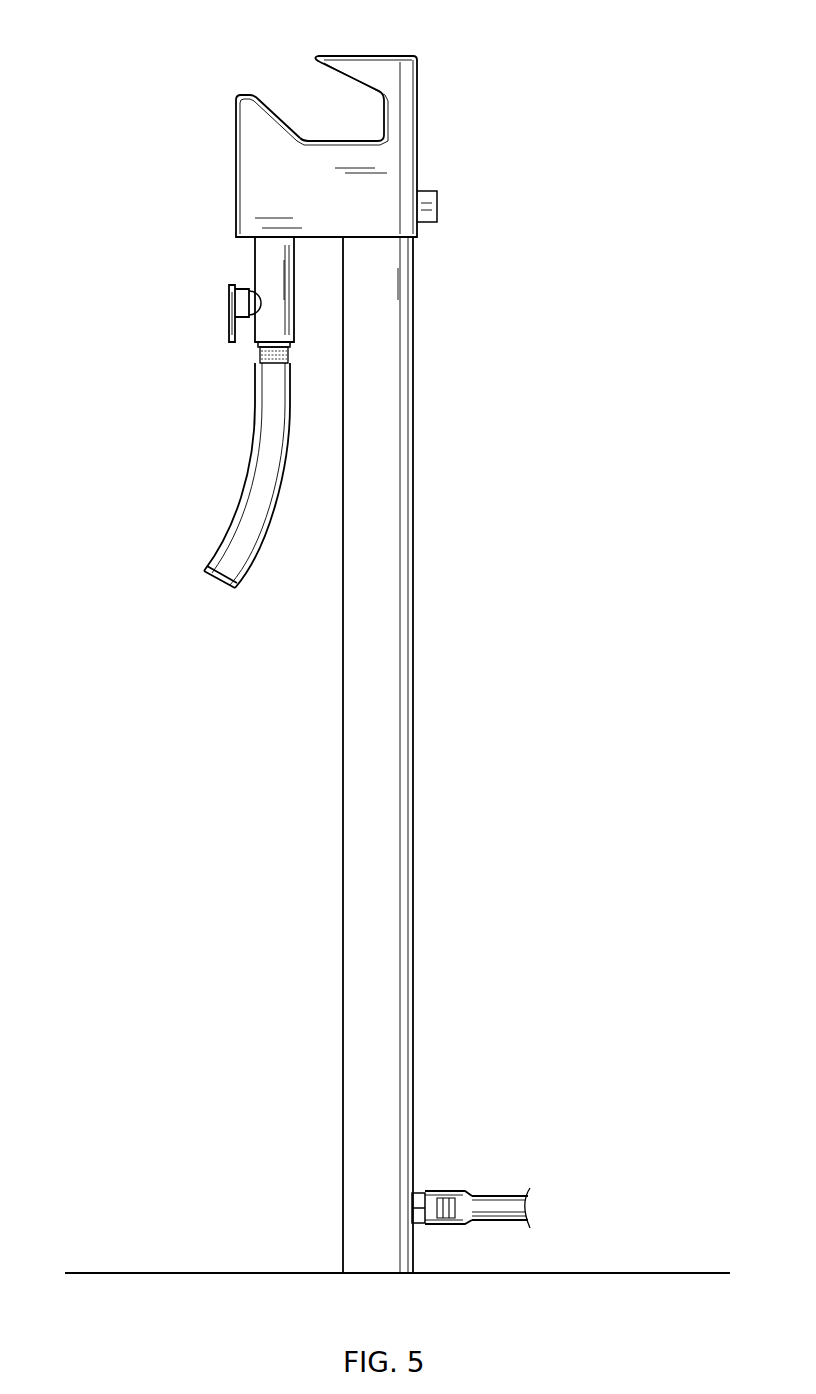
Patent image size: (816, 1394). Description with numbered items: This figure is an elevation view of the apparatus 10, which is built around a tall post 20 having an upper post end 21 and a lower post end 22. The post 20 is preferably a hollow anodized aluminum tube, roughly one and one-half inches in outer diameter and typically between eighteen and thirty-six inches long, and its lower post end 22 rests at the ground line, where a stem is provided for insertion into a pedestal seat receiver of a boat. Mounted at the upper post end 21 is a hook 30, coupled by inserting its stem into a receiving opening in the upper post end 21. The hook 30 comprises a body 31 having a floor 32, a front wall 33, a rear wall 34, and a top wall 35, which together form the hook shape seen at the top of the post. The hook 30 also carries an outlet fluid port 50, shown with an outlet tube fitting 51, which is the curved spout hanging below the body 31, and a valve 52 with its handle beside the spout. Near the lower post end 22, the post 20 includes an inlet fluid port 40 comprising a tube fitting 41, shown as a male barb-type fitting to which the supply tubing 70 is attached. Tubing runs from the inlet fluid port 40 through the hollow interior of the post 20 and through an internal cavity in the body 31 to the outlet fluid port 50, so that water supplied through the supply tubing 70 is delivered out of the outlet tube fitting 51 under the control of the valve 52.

The apparatus 10 is at (600, 172).
The post 20 is at (414, 500).
The upper post end 21 is at (414, 258).
The lower post end 22 is at (415, 1260).
The hook 30 is at (486, 99).
The body 31 is at (270, 173).
The floor 32 is at (337, 140).
The front wall 33 is at (278, 115).
The rear wall 34 is at (358, 90).
The top wall 35 is at (312, 65).
The inlet fluid port 40 is at (455, 1175).
The tube fitting 41 is at (455, 1210).
The outlet fluid port 50 is at (178, 259).
The outlet tube fitting 51 is at (260, 362).
The valve 52 is at (228, 317).
The supply tubing 70 is at (515, 1208).